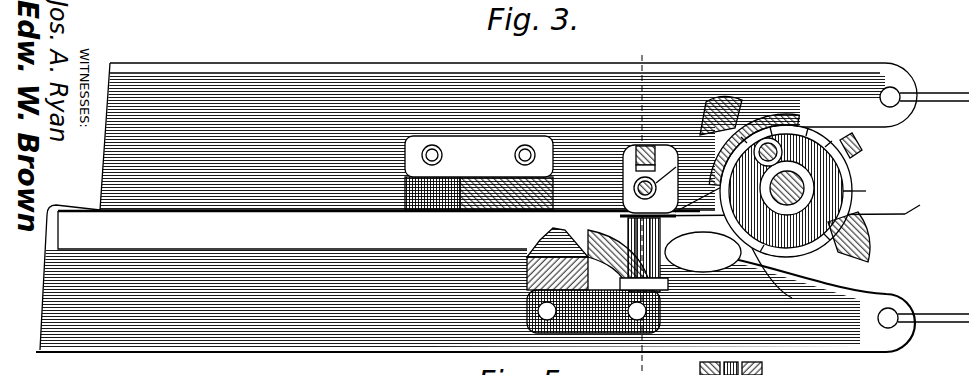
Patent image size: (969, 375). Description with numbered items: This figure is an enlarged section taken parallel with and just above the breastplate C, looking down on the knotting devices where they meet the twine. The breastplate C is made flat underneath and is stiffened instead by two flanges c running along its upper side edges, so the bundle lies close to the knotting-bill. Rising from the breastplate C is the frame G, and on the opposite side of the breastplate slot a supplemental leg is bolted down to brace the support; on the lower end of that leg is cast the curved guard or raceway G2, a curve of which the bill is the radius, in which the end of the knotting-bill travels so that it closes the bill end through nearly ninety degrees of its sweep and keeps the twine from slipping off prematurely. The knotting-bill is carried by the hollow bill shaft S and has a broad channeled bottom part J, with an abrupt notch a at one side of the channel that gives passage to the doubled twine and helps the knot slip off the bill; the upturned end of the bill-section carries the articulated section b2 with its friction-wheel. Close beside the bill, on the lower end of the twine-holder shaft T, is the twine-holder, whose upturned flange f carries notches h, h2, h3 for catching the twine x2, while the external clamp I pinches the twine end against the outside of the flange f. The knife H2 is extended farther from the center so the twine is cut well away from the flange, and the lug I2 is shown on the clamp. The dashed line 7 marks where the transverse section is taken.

The breastplate C is at (534, 136).
The stiffening-flanges c is at (355, 64).
The frame G is at (497, 177).
The curved guard or raceway G2 is at (608, 292).
The knotting-bill shaft S is at (623, 188).
The articulated section b2 is at (647, 146).
The section line 7 7 is at (642, 206).
The notch a is at (624, 261).
The channeled bottom part of knotting-bill J is at (703, 252).
The notch h is at (820, 108).
The notch h2 is at (869, 190).
The notch h3 is at (772, 280).
The clamp I is at (772, 124).
The ring lug I2 is at (865, 152).
The knife H2 is at (872, 245).
The flange f is at (818, 133).
The twine x2 is at (919, 201).
The twine-holder shaft T is at (760, 255).